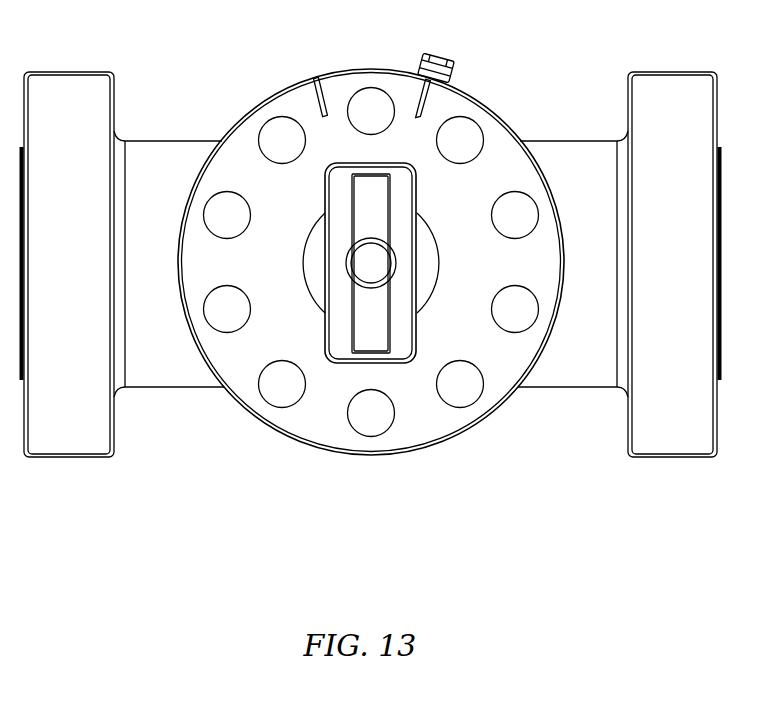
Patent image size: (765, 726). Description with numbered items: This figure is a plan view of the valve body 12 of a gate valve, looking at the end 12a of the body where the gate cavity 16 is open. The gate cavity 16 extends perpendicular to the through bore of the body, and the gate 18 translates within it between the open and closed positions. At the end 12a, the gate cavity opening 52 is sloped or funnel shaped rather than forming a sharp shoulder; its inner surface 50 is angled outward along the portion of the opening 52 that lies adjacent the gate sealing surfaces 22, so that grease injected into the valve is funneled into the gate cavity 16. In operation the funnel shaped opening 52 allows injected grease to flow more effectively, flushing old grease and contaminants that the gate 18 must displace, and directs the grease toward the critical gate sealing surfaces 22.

The valve body 12 is at (316, 453).
The end of valve body 12a is at (273, 333).
The gate cavity 16 is at (350, 163).
The gate 18 is at (398, 348).
The gate sealing surfaces 22 is at (413, 287).
The inner surface 50 is at (420, 237).
The gate cavity opening 52 is at (295, 212).